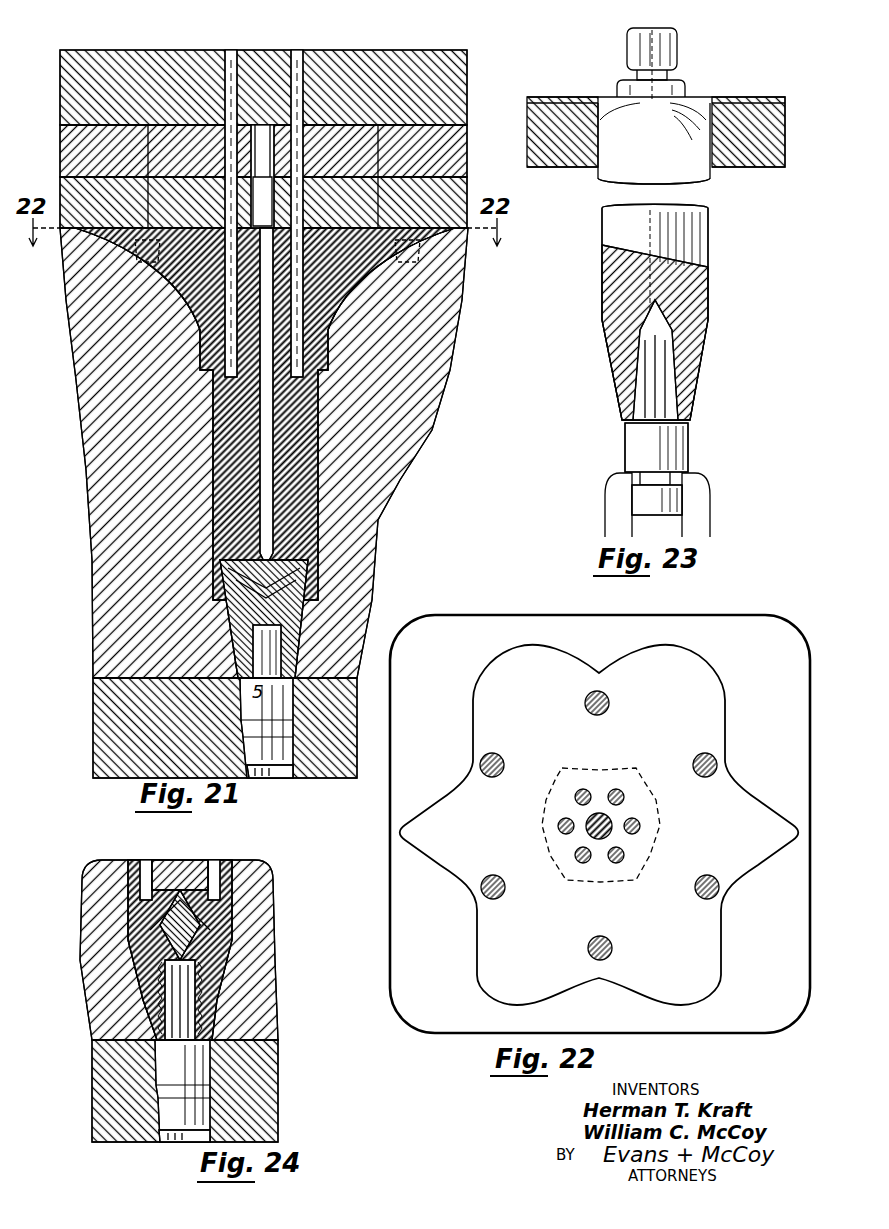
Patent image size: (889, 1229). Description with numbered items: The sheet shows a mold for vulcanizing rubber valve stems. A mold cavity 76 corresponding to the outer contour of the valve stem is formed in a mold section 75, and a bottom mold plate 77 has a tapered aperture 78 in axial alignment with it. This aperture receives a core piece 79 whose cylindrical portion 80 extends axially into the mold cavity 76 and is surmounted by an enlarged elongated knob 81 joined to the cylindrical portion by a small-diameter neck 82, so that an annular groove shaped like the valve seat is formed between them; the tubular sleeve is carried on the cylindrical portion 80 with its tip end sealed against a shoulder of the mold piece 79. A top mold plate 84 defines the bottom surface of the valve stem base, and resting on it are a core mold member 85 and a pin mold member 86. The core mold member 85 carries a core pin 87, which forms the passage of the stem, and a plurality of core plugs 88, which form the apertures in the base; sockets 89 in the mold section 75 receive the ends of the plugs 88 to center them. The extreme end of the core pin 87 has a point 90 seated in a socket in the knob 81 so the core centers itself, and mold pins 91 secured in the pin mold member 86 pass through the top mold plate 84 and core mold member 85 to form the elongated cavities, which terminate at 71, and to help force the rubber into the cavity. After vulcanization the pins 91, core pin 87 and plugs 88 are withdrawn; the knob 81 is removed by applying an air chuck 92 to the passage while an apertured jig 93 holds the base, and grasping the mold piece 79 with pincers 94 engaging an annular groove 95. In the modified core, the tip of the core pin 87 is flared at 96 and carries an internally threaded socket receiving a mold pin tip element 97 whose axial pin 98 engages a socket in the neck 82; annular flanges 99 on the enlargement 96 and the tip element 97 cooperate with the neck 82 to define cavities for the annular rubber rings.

In FIG. 24, the termination of the elongated cavities 71 is at (140, 870).
In FIG. 21, the mold section 75 is at (396, 412).
In FIG. 22, the mold section 75 is at (498, 620).
In FIG. 21, the mold cavity 76 is at (318, 448).
In FIG. 22, the mold cavity 76 is at (648, 792).
In FIG. 21, the bottom mold plate 77 is at (152, 766).
In FIG. 24, the bottom mold plate 77 is at (265, 1110).
In FIG. 21, the tapered aperture 78 is at (285, 776).
In FIG. 24, the tapered aperture 78 is at (175, 1142).
In FIG. 21, the core piece 79 is at (250, 703).
In FIG. 24, the core piece 79 is at (198, 1066).
In FIG. 21, the cylindrical portion 80 is at (253, 657).
In FIG. 21, the knob 81 is at (298, 565).
In FIG. 21, the neck 82 is at (238, 600).
In FIG. 24, the neck 82 is at (145, 995).
In FIG. 21, the top mold plate 84 is at (444, 248).
In FIG. 21, the core mold member 85 is at (467, 128).
In FIG. 21, the pin mold member 86 is at (455, 82).
In FIG. 21, the core pin 87 is at (260, 428).
In FIG. 22, the core pin 87 is at (605, 830).
In FIG. 21, the core plugs 88 is at (263, 176).
In FIG. 21, the sockets 89 is at (274, 270).
In FIG. 22, the sockets 89 is at (712, 877).
In FIG. 21, the point 90 is at (240, 566).
In FIG. 21, the mold pins 91 is at (226, 368).
In FIG. 22, the mold pins 91 is at (580, 790).
In FIG. 23, the air chuck 92 is at (680, 55).
In FIG. 23, the apertured jig 93 is at (740, 165).
In FIG. 23, the pincers 94 is at (612, 500).
In FIG. 23, the annular groove 95 is at (642, 470).
In FIG. 24, the enlarged or flared tip end of the core pin 96 is at (212, 910).
In FIG. 24, the mold pin tip element 97 is at (140, 918).
In FIG. 24, the axially extending pin 98 is at (200, 985).
In FIG. 24, the annular ring shaped flanges 99 is at (200, 940).